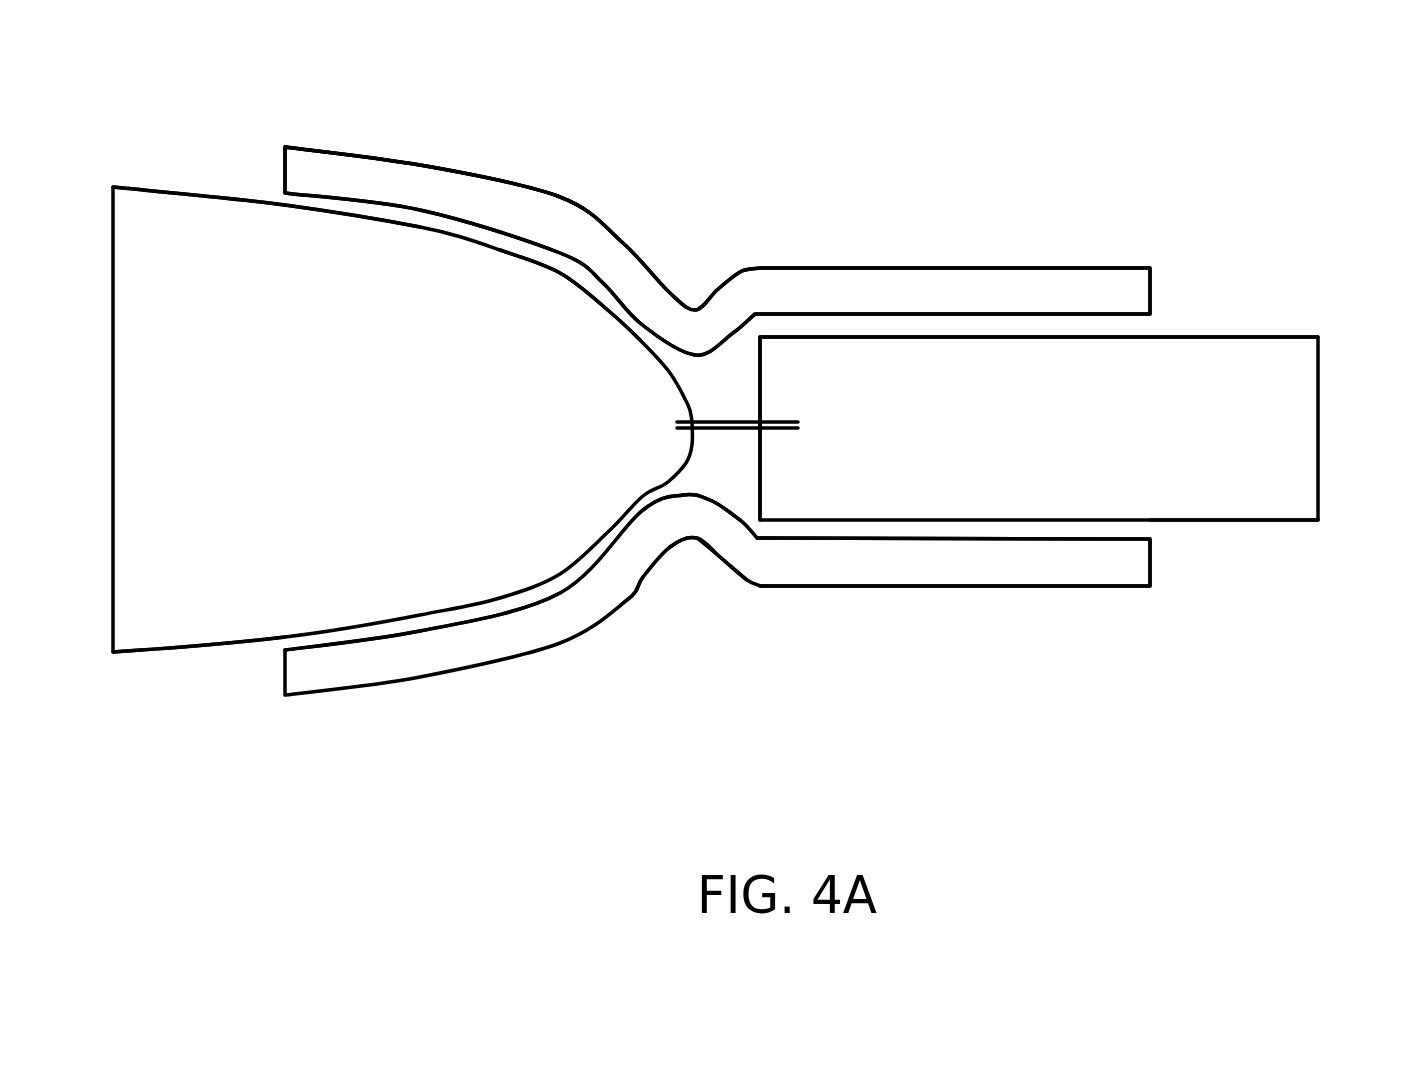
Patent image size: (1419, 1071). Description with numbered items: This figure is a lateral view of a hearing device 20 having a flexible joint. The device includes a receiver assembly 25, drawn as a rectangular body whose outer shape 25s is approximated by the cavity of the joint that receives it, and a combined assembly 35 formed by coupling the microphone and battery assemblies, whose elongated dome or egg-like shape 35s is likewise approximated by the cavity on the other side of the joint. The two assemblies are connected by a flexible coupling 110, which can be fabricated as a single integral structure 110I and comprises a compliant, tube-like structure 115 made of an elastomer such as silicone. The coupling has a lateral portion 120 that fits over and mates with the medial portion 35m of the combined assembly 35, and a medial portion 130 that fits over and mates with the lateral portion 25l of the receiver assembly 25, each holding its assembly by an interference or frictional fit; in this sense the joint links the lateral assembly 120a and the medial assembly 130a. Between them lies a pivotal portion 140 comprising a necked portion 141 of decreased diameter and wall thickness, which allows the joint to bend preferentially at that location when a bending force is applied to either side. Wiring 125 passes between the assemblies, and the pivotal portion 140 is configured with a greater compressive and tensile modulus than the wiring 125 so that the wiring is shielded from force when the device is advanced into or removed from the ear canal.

The hearing device 20 is at (548, 692).
The receiver assembly 25 is at (1292, 430).
The shape of receiver assembly 25s is at (1222, 337).
The lateral portion of receiver assembly 25l is at (792, 352).
The combined assembly 35 is at (158, 300).
The shape of combined assembly 35s is at (190, 196).
The medial portion of combined assembly 35m is at (572, 322).
The flexible coupling 110 is at (315, 163).
The single integral structure 110I is at (717, 201).
The compliant structure 115 is at (405, 180).
The lateral portion 120 is at (367, 663).
The lateral assembly 120a is at (168, 620).
The wiring 125 is at (780, 420).
The medial portion 130 is at (1013, 560).
The medial assembly 130a is at (1238, 503).
The pivotal portion 140 is at (680, 520).
The necked portion 141 is at (692, 599).